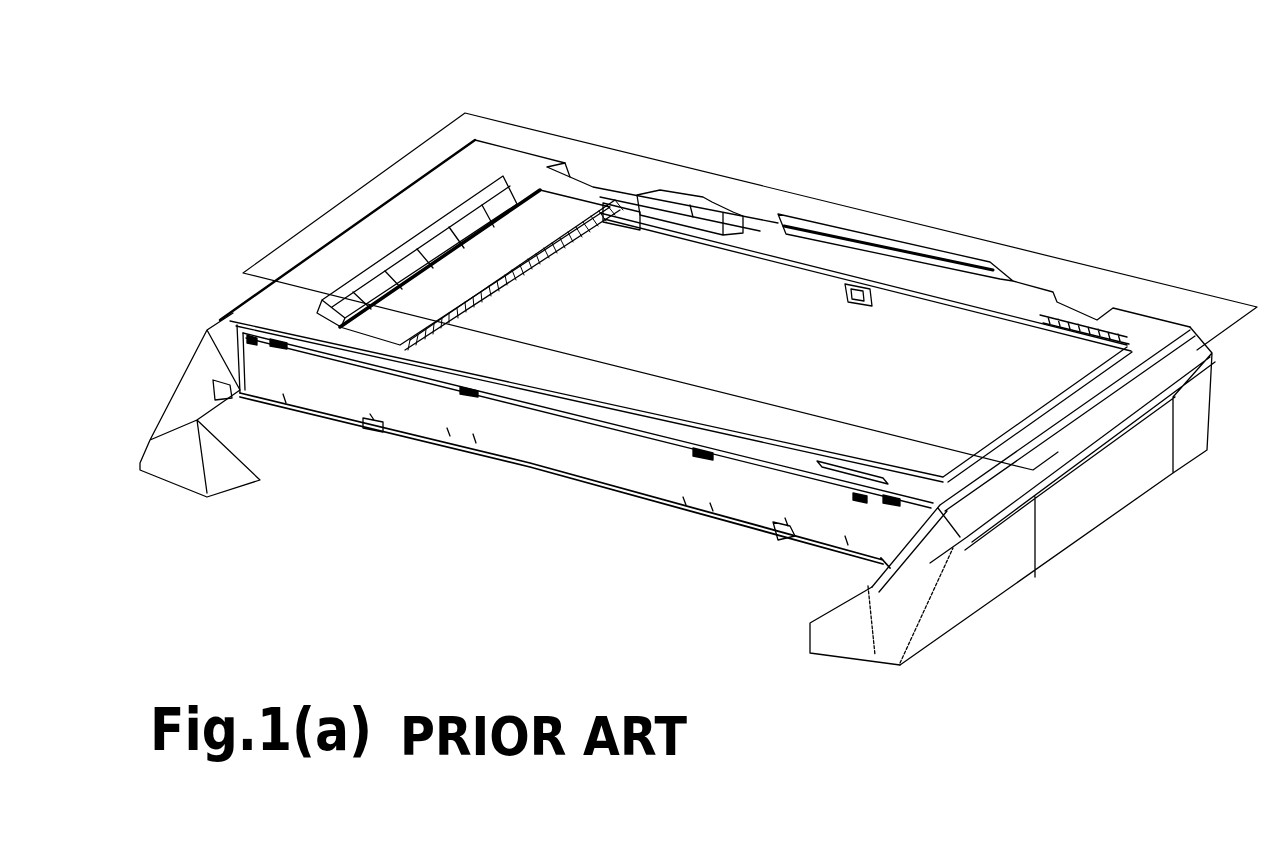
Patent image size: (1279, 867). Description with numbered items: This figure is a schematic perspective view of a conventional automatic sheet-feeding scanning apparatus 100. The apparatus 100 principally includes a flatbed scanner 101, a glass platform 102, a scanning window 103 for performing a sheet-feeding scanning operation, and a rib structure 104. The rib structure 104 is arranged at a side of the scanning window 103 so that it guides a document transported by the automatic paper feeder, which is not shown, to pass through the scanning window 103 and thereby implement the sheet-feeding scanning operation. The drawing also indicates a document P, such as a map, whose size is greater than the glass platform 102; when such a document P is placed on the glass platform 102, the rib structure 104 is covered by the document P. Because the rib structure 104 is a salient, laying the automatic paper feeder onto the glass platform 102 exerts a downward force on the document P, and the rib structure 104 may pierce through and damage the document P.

The automatic sheet-feeding scanning apparatus 100 is at (1063, 117).
The flatbed scanner 101 is at (257, 318).
The glass platform 102 is at (773, 417).
The scanning window 103 is at (387, 323).
The rib structure 104 is at (493, 203).
The document P is at (1160, 307).